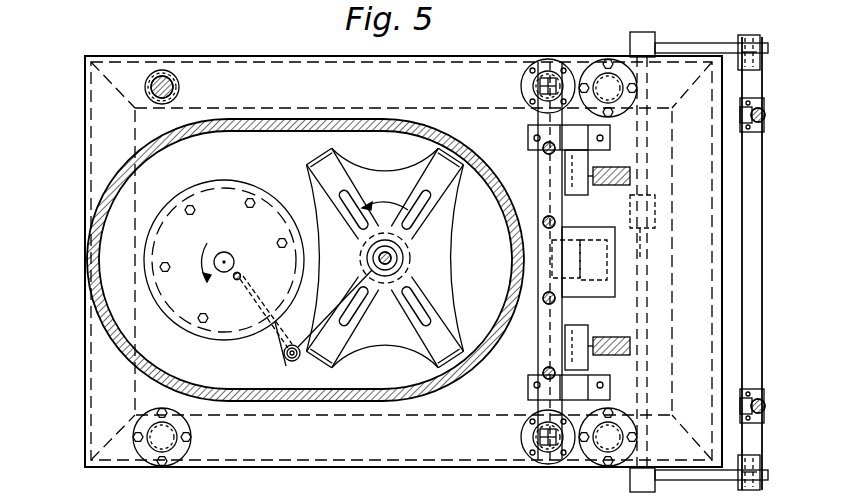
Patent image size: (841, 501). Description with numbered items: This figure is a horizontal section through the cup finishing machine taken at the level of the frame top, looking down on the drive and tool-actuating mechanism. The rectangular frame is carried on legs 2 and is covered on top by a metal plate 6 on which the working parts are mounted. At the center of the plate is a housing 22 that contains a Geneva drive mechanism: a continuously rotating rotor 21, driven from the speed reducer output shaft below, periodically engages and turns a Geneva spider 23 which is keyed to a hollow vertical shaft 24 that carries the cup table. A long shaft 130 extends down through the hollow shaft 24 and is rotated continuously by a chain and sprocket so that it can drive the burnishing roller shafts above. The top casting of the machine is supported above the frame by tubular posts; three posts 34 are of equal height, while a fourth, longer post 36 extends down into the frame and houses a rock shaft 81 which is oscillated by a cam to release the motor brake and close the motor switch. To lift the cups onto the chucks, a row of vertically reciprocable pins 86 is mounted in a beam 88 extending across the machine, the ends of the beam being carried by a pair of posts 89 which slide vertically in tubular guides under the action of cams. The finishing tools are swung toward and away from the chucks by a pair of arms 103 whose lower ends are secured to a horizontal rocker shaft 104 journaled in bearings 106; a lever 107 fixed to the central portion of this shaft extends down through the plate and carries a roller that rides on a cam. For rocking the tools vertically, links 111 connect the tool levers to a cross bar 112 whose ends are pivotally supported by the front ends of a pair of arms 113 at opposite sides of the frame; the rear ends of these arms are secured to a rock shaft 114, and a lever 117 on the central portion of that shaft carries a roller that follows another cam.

The legs 2 is at (82, 70).
The metal plate 6 is at (102, 133).
The rotor 21 is at (203, 200).
The housing 22 is at (92, 220).
The Geneva spider 23 is at (484, 165).
The hollow vertical shaft 24 is at (316, 338).
The posts 34 is at (600, 68).
The post 36 is at (157, 75).
The rock shaft 81 is at (163, 75).
The vertically reciprocable pins 86 is at (540, 303).
The beam 88 is at (538, 200).
The posts 89 is at (540, 442).
The arms 103 is at (620, 165).
The rocker shaft 104 is at (573, 215).
The bearings 106 is at (600, 373).
The lever 107 is at (613, 260).
The links 111 is at (765, 112).
The cross bar 112 is at (750, 172).
The arms 113 is at (680, 47).
The rock shaft 114 is at (643, 175).
The lever 117 is at (653, 210).
The long shaft 130 is at (380, 273).